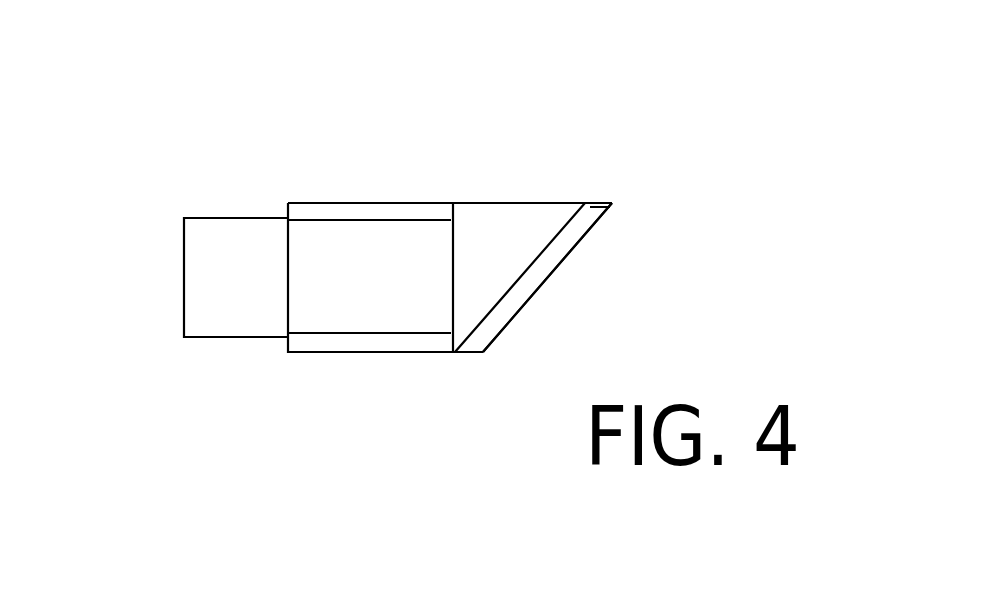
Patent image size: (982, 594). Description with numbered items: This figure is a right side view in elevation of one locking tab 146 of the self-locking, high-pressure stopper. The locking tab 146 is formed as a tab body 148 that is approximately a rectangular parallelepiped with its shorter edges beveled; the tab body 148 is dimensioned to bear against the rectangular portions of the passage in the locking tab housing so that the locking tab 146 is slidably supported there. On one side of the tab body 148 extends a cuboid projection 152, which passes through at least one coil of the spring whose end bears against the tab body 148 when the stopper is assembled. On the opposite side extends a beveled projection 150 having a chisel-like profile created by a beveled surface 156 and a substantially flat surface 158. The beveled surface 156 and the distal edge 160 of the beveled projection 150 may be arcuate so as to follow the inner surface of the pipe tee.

The locking tab 146 is at (532, 123).
The tab body 148 is at (402, 313).
The beveled projection 150 is at (485, 227).
The cuboid projection 152 is at (232, 308).
The beveled surface 156 is at (532, 283).
The flat surface 158 is at (547, 203).
The distal edge 160 is at (612, 204).